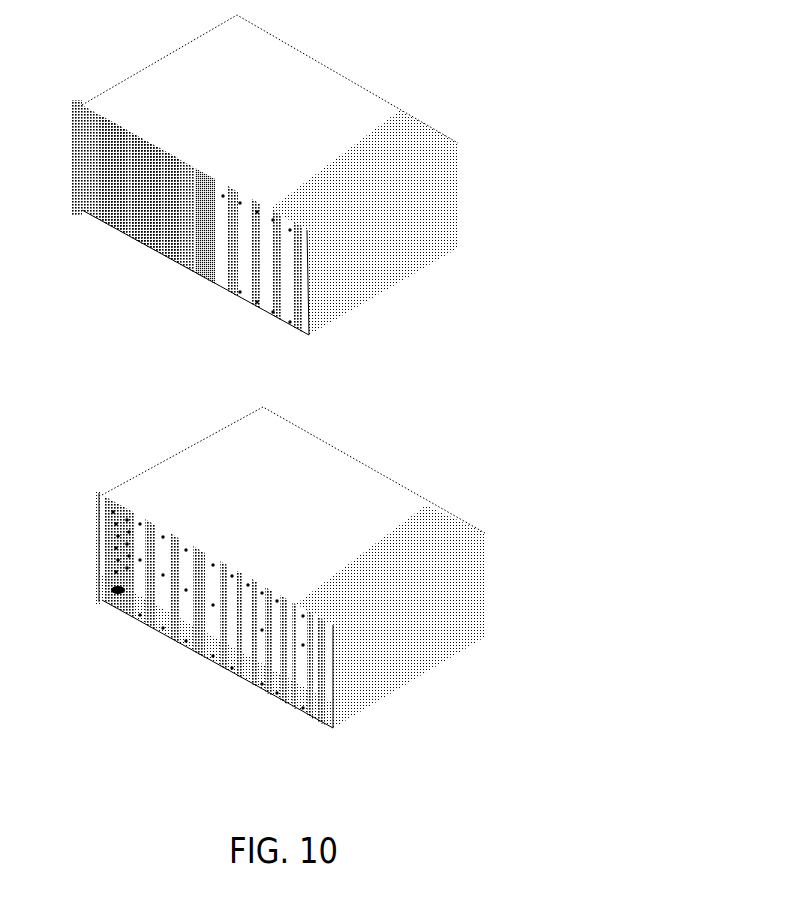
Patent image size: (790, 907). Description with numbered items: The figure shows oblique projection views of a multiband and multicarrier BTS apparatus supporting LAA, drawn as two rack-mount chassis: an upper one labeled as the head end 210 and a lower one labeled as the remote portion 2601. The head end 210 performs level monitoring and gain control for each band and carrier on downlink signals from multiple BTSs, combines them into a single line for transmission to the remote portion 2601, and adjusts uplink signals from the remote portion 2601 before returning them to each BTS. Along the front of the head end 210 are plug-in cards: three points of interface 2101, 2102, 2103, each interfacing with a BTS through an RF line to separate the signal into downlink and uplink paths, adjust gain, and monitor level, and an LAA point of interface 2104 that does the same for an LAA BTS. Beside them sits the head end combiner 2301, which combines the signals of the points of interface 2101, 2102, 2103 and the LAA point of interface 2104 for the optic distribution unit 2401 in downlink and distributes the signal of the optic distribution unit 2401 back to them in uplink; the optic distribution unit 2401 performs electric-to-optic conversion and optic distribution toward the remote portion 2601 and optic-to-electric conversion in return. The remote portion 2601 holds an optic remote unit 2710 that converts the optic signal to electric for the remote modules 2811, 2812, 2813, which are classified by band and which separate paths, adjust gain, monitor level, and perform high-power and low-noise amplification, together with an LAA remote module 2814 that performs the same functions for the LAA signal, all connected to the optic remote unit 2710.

The head end 210 is at (362, 88).
The point of interface 2101 is at (107, 218).
The point of interface 2102 is at (118, 228).
The point of interface 2103 is at (138, 242).
The LAA point of interface 2104 is at (153, 248).
The head end combiner 2301 is at (170, 262).
The optic distribution unit 2401 is at (200, 278).
The remote portion 2601 is at (372, 472).
The optic remote unit 2710 is at (123, 603).
The remote module 2811 is at (152, 622).
The remote module 2812 is at (183, 648).
The remote module 2813 is at (215, 667).
The LAA remote module 2814 is at (247, 687).